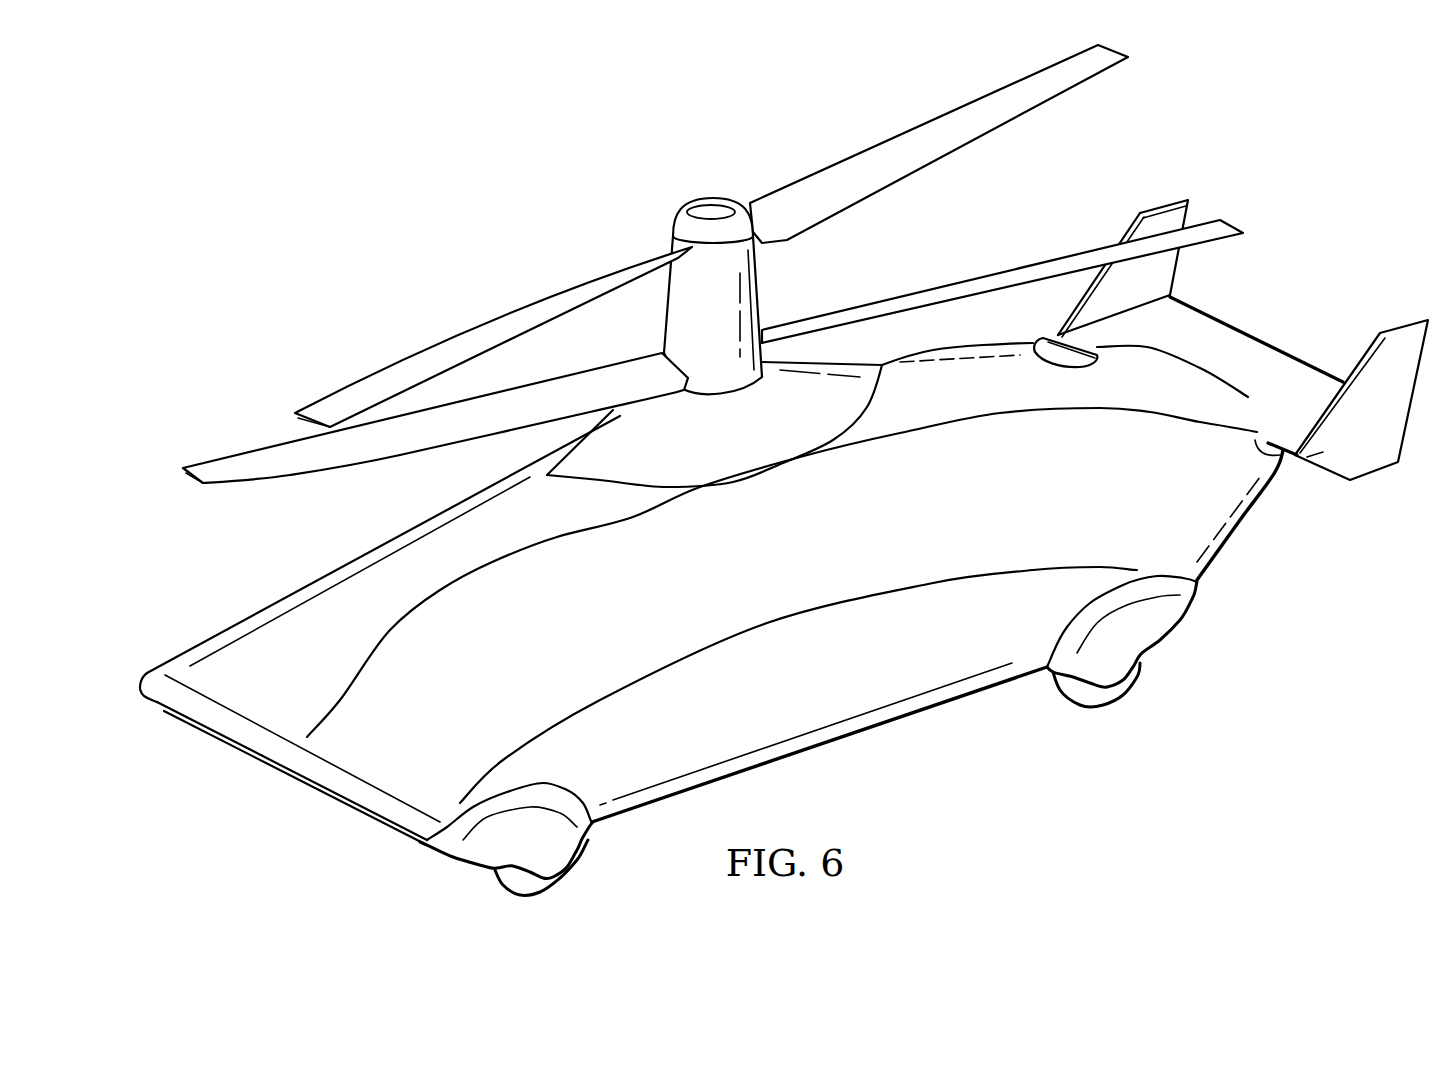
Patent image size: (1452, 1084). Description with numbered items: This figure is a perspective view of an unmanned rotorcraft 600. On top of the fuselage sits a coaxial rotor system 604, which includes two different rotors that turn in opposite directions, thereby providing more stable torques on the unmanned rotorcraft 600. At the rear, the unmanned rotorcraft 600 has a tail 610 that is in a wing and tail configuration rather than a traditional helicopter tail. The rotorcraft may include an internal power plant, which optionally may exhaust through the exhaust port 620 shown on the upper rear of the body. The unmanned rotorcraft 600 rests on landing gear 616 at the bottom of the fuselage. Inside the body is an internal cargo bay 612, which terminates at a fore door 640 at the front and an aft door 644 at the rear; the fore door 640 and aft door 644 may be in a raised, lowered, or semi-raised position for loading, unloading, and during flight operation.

The unmanned rotorcraft 600 is at (372, 211).
The coaxial rotor system 604 is at (706, 198).
The tail 610 is at (1428, 320).
The internal cargo bay 612 is at (862, 700).
The landing gear 616 is at (495, 875).
The exhaust port 620 is at (1053, 335).
The fore door 640 is at (250, 754).
The aft door 644 is at (1243, 521).